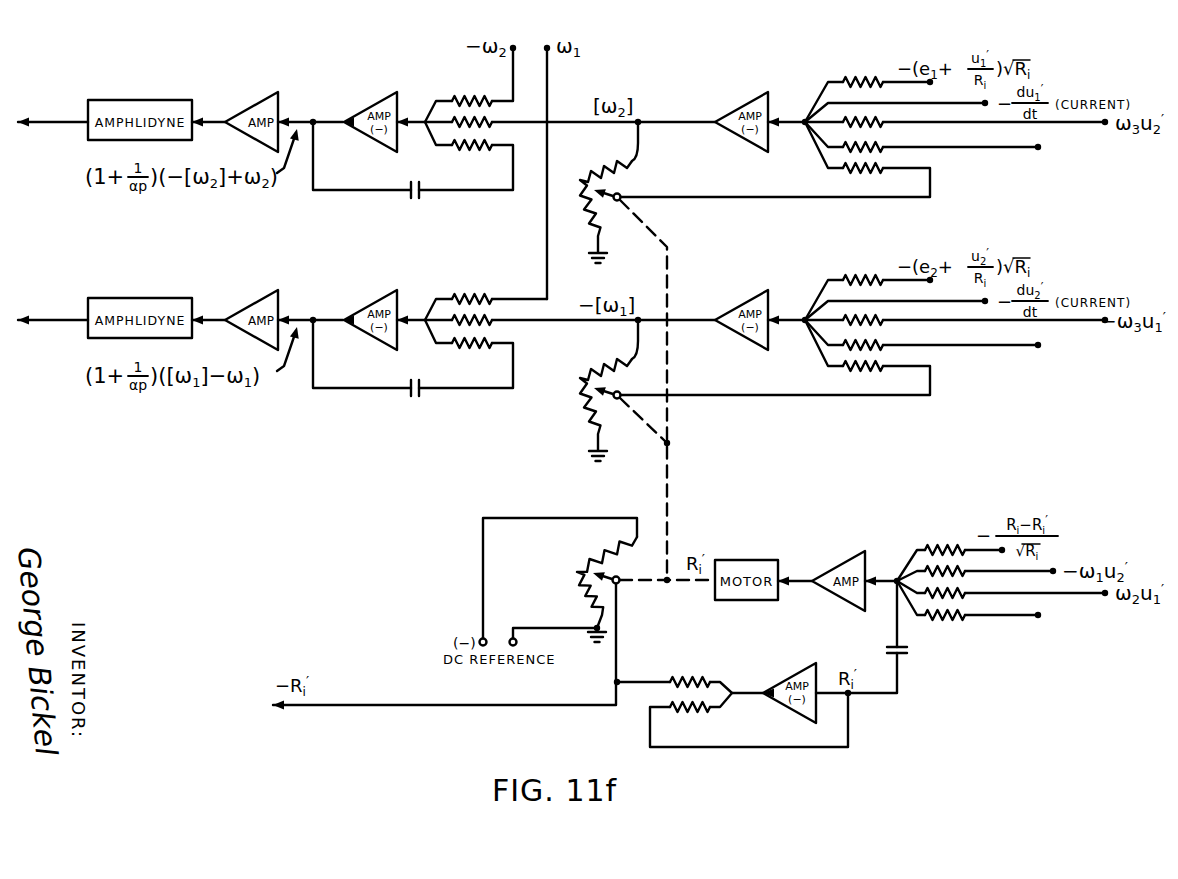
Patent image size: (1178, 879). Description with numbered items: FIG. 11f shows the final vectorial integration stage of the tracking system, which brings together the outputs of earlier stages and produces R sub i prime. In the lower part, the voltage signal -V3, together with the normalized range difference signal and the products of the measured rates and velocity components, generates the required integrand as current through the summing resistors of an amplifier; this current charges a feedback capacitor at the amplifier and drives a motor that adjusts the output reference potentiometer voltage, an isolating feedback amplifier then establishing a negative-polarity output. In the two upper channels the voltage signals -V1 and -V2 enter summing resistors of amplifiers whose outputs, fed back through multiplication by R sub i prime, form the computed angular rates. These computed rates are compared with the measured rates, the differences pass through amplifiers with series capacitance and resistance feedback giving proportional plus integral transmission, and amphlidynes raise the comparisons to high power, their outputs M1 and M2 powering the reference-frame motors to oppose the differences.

The amphlidyne output M2 is at (53, 109).
The amphlidyne output M1 is at (53, 307).
The voltage signal V1 is at (944, 141).
The voltage signal V2 is at (944, 339).
The voltage signal V3 is at (990, 605).